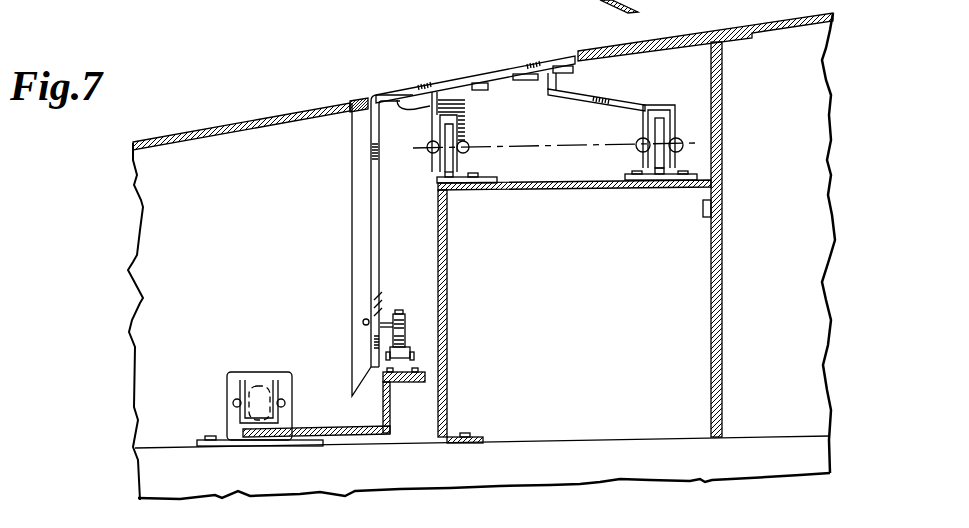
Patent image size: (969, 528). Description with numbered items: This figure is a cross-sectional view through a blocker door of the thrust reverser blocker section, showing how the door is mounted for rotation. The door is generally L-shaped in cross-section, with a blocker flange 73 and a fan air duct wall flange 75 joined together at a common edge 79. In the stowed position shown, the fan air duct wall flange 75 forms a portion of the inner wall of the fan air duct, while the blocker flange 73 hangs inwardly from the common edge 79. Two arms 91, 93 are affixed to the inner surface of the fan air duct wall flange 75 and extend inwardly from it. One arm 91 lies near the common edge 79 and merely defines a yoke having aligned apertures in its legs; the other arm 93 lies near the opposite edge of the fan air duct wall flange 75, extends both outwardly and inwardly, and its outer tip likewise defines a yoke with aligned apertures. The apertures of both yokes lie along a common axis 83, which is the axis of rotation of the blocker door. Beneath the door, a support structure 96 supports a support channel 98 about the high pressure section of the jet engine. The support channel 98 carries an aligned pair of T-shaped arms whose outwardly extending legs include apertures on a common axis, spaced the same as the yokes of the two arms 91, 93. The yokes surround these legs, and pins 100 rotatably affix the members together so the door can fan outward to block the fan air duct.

The blocker flange 73 is at (360, 236).
The fan air duct wall flange 75 is at (459, 80).
The common edge 79 is at (358, 101).
The common axis 83 is at (537, 146).
The arm 91 is at (400, 104).
The arm 93 is at (608, 93).
The support structure 96 is at (723, 266).
The support channel 98 is at (580, 190).
The pins 100 is at (428, 151).